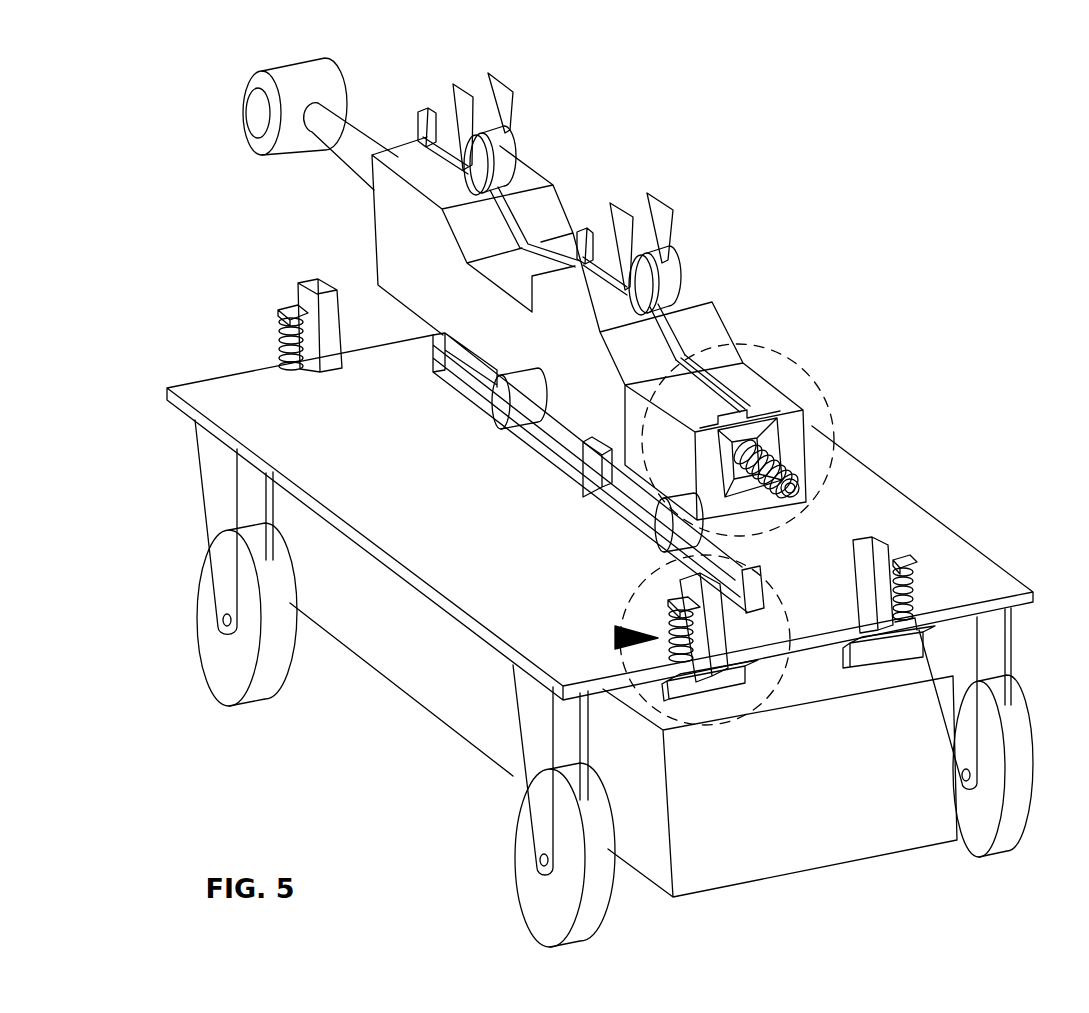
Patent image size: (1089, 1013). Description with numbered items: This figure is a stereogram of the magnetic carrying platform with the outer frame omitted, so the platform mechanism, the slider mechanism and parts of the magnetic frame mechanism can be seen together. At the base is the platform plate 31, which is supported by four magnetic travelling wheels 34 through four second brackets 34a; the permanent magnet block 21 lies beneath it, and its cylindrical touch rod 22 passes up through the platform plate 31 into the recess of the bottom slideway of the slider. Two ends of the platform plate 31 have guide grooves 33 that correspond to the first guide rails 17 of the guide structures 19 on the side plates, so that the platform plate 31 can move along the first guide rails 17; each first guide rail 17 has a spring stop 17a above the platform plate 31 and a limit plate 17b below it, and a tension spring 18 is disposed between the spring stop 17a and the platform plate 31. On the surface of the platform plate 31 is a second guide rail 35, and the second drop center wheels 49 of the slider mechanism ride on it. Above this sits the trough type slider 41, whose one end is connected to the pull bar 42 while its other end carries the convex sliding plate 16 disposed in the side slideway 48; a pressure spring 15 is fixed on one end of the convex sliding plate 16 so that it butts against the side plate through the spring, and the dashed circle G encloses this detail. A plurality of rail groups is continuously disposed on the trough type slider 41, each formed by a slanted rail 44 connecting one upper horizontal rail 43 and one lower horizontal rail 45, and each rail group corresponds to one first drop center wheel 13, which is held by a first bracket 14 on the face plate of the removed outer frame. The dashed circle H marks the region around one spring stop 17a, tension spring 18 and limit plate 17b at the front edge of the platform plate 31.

The first drop center wheel 13 is at (513, 160).
The first bracket 14 is at (451, 82).
The pressure spring 15 is at (787, 477).
The convex sliding plate 16 is at (790, 435).
The first guide rail 17 is at (877, 543).
The spring stop 17a is at (293, 307).
The limit plate 17b is at (885, 655).
The tension spring 18 is at (285, 335).
The guide structure 19 is at (617, 633).
The permanent magnet block 21 is at (402, 658).
The cylindrical touch rod 22 is at (597, 467).
The platform plate 31 is at (238, 403).
The guide groove 33 is at (907, 622).
The magnetic travelling wheel 34 is at (247, 665).
The second bracket 34a is at (213, 493).
The second guide rail 35 is at (458, 380).
The trough type slider 41 is at (420, 273).
The pull bar 42 is at (258, 110).
The upper horizontal rail 43 is at (445, 148).
The slanted rail 44 is at (508, 212).
The lower horizontal rail 45 is at (712, 382).
The side slideway 48 is at (757, 430).
The second drop center wheel 49 is at (505, 417).
The detail region G is at (752, 353).
The detail region H is at (765, 637).